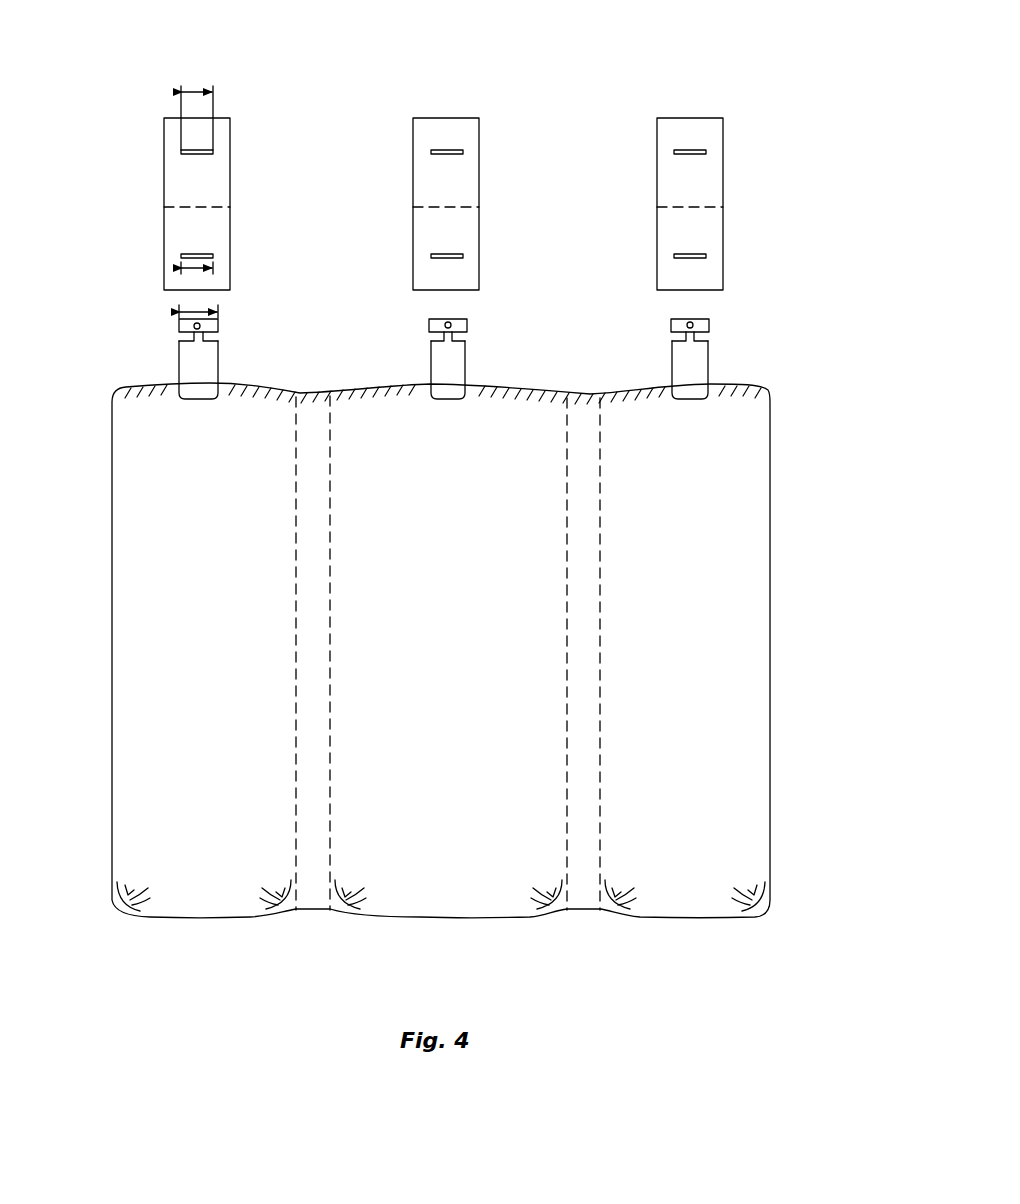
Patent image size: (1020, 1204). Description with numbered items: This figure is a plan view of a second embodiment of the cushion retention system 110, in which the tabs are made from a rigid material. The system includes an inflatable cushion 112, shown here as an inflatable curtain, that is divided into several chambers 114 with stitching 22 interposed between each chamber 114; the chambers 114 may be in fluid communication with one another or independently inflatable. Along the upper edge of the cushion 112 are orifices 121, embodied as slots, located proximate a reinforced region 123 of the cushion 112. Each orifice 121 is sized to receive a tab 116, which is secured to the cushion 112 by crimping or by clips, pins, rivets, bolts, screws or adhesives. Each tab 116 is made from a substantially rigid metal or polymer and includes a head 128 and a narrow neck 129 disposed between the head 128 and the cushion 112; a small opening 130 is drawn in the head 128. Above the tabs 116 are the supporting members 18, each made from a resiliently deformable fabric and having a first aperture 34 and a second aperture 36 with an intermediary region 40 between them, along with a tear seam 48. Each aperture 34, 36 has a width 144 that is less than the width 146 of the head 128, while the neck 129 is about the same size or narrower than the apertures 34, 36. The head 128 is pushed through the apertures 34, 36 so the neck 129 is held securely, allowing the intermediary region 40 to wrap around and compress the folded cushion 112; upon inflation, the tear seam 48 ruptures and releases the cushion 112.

The cushion retention system 110 is at (153, 90).
The supporting member 18 is at (230, 120).
The first aperture 34 is at (213, 152).
The tear seam 48 is at (230, 207).
The intermediary region 40 is at (225, 231).
The second aperture 36 is at (213, 256).
The aperture width 144 is at (200, 90).
The head width 146 is at (205, 308).
The tab 116 is at (460, 368).
The head 128 is at (180, 324).
The neck 129 is at (205, 336).
The aperture 130 is at (195, 329).
The orifice 121 is at (190, 394).
The inflatable cushion 112 is at (106, 526).
The stitching 22 is at (330, 553).
The reinforced region 123 is at (497, 400).
The chamber 114 is at (185, 890).